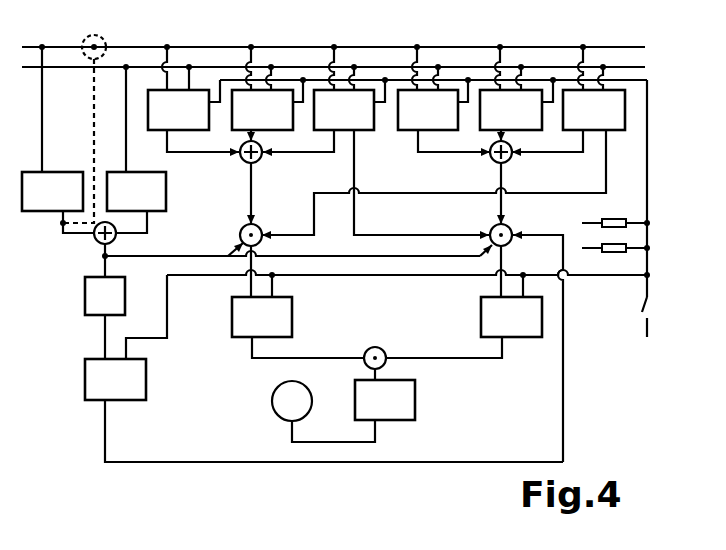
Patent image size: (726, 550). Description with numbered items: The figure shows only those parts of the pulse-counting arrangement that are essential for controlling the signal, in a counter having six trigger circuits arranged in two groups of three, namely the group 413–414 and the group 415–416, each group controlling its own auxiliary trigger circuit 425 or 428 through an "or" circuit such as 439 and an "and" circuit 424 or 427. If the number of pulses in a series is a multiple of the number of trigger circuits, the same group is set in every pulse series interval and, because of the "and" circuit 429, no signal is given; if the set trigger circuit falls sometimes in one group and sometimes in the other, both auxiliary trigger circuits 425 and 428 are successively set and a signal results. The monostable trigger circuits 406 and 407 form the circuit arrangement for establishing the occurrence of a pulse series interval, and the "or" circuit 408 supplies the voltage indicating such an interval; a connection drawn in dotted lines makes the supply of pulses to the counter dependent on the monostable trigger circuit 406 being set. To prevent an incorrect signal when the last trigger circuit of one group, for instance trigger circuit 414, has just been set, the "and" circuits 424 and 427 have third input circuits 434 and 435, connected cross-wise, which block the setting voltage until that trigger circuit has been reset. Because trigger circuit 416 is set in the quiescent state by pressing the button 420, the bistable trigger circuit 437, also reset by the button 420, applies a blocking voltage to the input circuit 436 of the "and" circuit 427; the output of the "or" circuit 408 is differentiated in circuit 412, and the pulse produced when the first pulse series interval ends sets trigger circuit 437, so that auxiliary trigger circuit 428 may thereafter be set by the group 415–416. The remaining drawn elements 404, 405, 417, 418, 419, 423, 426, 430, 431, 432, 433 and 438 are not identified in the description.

The measuring point 404 is at (99, 126).
The supply line 405 is at (333, 78).
The monostable trigger circuit 406 is at (52, 191).
The monostable trigger circuit 407 is at (136, 191).
The "or" circuit 408 is at (104, 244).
The differentiating circuit 412 is at (105, 318).
The trigger circuit 413 is at (178, 110).
The trigger circuit 414 is at (344, 110).
The trigger circuit 415 is at (428, 110).
The trigger circuit 416 is at (594, 110).
The line 417 is at (636, 188).
The resistor 418 is at (614, 214).
The resistor 419 is at (614, 260).
The button 420 is at (639, 309).
The connection line 423 is at (267, 193).
The "and" circuit 424 is at (234, 255).
The auxiliary trigger circuit 425 is at (298, 327).
The connection line 426 is at (517, 193).
The "and" circuit 427 is at (487, 254).
The auxiliary trigger circuit 428 is at (464, 327).
The "and" circuit 429 is at (376, 355).
The function unit 430 is at (385, 400).
The setpoint source 431 is at (323, 411).
The control input 432 is at (221, 245).
The control input 433 is at (469, 247).
The input circuit 434 is at (434, 184).
The input circuit 435 is at (421, 184).
The input circuit 436 is at (538, 339).
The bistable trigger circuit 437 is at (324, 368).
The adder 438 is at (250, 155).
The "or" circuit 439 is at (500, 156).